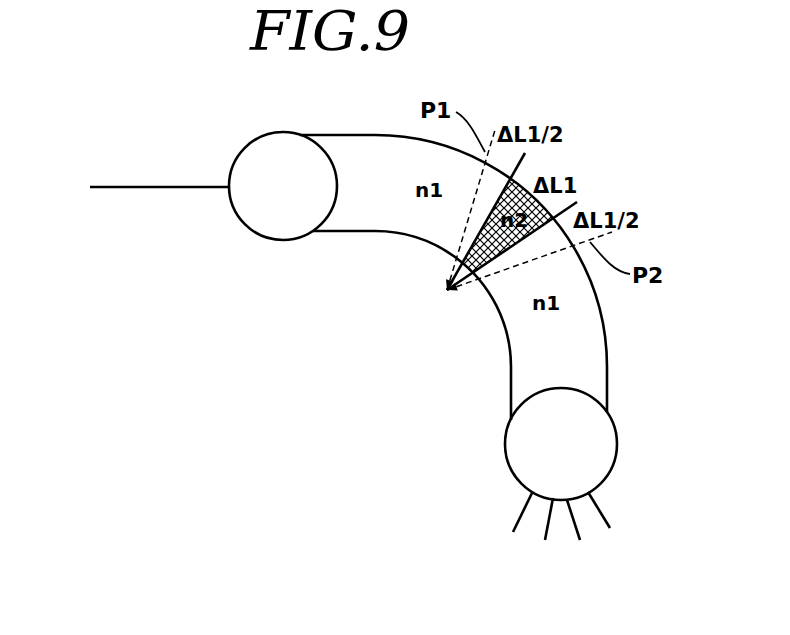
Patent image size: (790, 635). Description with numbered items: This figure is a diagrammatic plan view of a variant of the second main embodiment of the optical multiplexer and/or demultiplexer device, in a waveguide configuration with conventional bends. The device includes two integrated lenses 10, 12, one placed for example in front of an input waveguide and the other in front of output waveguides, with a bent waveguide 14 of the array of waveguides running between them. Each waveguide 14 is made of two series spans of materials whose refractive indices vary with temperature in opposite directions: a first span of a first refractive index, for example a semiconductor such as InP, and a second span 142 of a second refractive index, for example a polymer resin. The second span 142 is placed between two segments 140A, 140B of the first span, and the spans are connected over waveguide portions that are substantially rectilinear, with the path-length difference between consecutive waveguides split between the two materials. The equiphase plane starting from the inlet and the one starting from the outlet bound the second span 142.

The integrated lens 10 is at (258, 240).
The integrated lens 12 is at (625, 462).
The waveguide 14 is at (440, 277).
The segment of the first span 140A is at (412, 213).
The segment of the first span 140B is at (548, 358).
The second span 142 is at (545, 206).